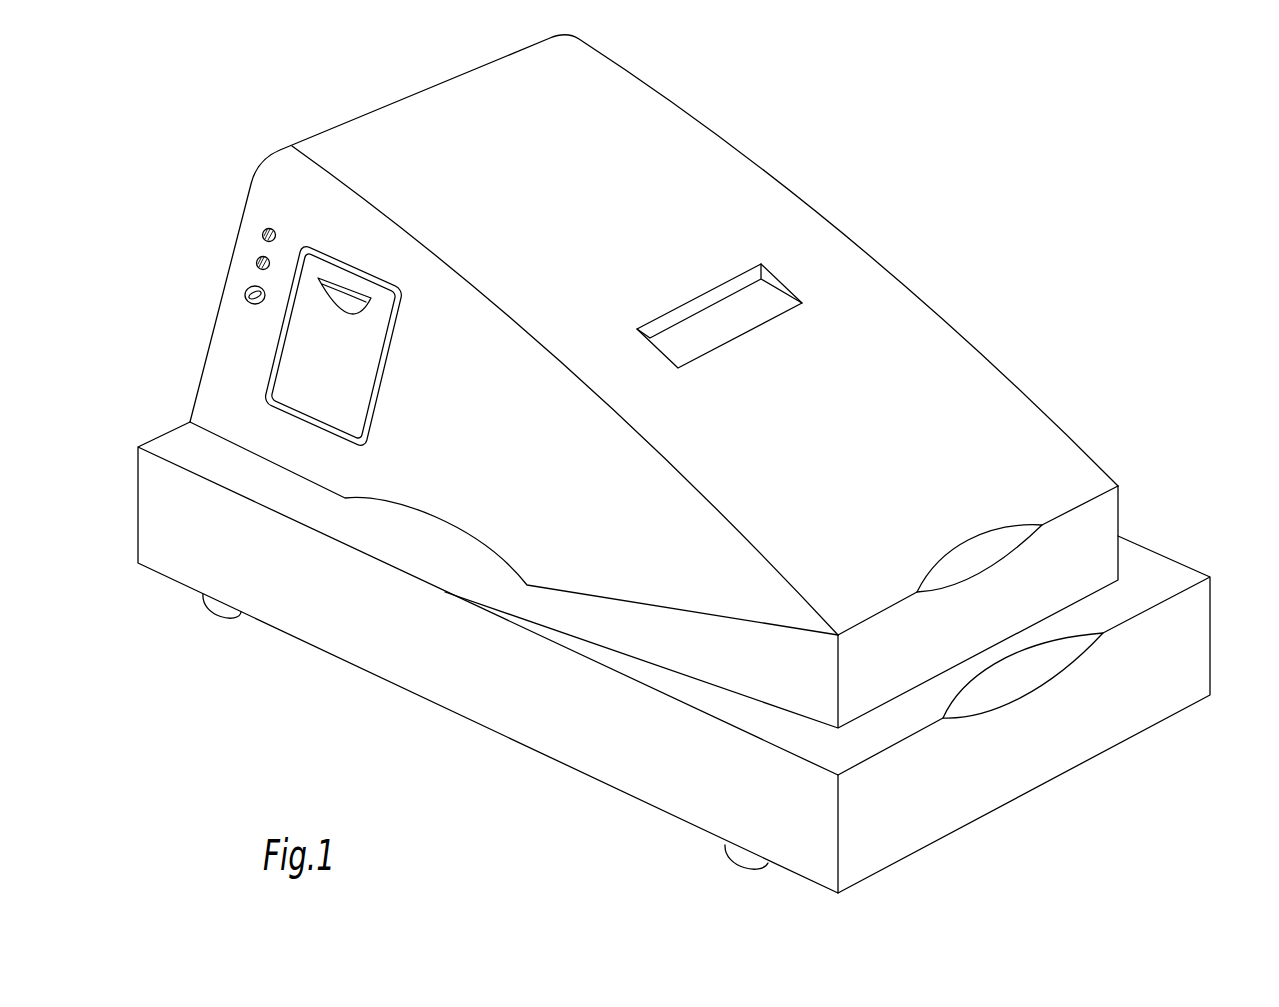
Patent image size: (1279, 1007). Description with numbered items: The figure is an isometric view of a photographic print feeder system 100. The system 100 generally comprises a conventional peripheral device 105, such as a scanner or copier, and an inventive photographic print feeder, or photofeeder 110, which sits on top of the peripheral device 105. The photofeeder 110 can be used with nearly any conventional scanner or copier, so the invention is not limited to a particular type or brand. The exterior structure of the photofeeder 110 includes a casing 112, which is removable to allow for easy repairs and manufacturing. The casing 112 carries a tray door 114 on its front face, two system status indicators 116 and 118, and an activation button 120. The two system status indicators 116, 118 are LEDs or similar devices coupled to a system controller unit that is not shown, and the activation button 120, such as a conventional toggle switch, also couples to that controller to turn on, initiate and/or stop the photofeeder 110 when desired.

The photographic print feeder system 100 is at (942, 207).
The peripheral device 105 is at (1167, 557).
The photographic print feeder 110 is at (955, 352).
The casing 112 is at (573, 177).
The tray door 114 is at (303, 352).
The system status indicator 116 is at (260, 232).
The system status indicator 118 is at (257, 260).
The activation button 120 is at (245, 293).